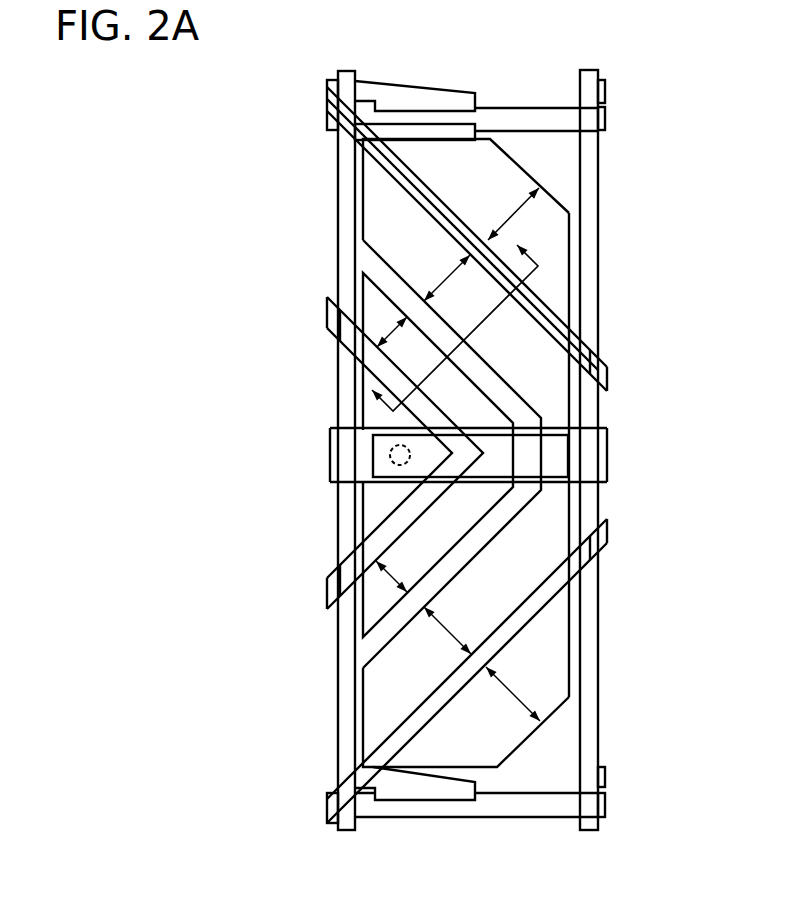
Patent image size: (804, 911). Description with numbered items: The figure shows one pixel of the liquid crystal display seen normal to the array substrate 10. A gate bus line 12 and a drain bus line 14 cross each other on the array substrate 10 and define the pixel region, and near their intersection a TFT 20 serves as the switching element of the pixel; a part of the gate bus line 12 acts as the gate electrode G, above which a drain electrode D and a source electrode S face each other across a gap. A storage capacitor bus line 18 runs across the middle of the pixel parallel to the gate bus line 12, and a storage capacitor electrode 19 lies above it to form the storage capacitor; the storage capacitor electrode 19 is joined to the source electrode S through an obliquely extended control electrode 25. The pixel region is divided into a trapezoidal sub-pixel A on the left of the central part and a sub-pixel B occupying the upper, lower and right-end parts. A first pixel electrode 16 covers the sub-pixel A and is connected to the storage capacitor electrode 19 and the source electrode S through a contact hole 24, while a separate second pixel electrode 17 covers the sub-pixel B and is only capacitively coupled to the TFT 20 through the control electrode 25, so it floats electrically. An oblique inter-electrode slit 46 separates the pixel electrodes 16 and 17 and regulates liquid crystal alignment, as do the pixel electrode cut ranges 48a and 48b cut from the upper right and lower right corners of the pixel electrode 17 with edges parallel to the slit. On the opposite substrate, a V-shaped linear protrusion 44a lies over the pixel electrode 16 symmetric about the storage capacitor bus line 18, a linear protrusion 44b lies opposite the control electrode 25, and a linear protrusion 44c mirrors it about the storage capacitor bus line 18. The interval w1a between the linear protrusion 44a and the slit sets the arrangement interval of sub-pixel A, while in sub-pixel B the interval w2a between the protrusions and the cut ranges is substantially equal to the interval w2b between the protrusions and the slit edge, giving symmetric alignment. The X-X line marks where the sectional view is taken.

The array substrate 10 is at (285, 39).
The gate bus line 12 is at (557, 106).
The drain bus line 14 is at (346, 832).
The pixel electrode 16 is at (363, 272).
The pixel electrode 17 is at (571, 247).
The storage capacitor bus line 18 is at (609, 453).
The storage capacitor electrode 19 is at (529, 433).
The TFT 20 is at (401, 403).
The contact hole 24 is at (388, 456).
The control electrode 25 is at (572, 301).
The linear protrusion 44a is at (334, 330).
The linear protrusion 44b is at (607, 364).
The linear protrusion 44c is at (607, 535).
The inter-electrode slit 46 is at (366, 638).
The pixel electrode cut range 48a is at (572, 164).
The pixel electrode cut range 48b is at (572, 774).
The drain electrode D is at (395, 92).
The source electrode S is at (474, 126).
The gate electrode G is at (387, 118).
The sub-pixel A is at (360, 523).
The sub-pixel B is at (558, 192).
The X-X line X is at (459, 327).
The interval w1a is at (388, 334).
The structure interval w2a is at (522, 212).
The interval w2b is at (445, 280).